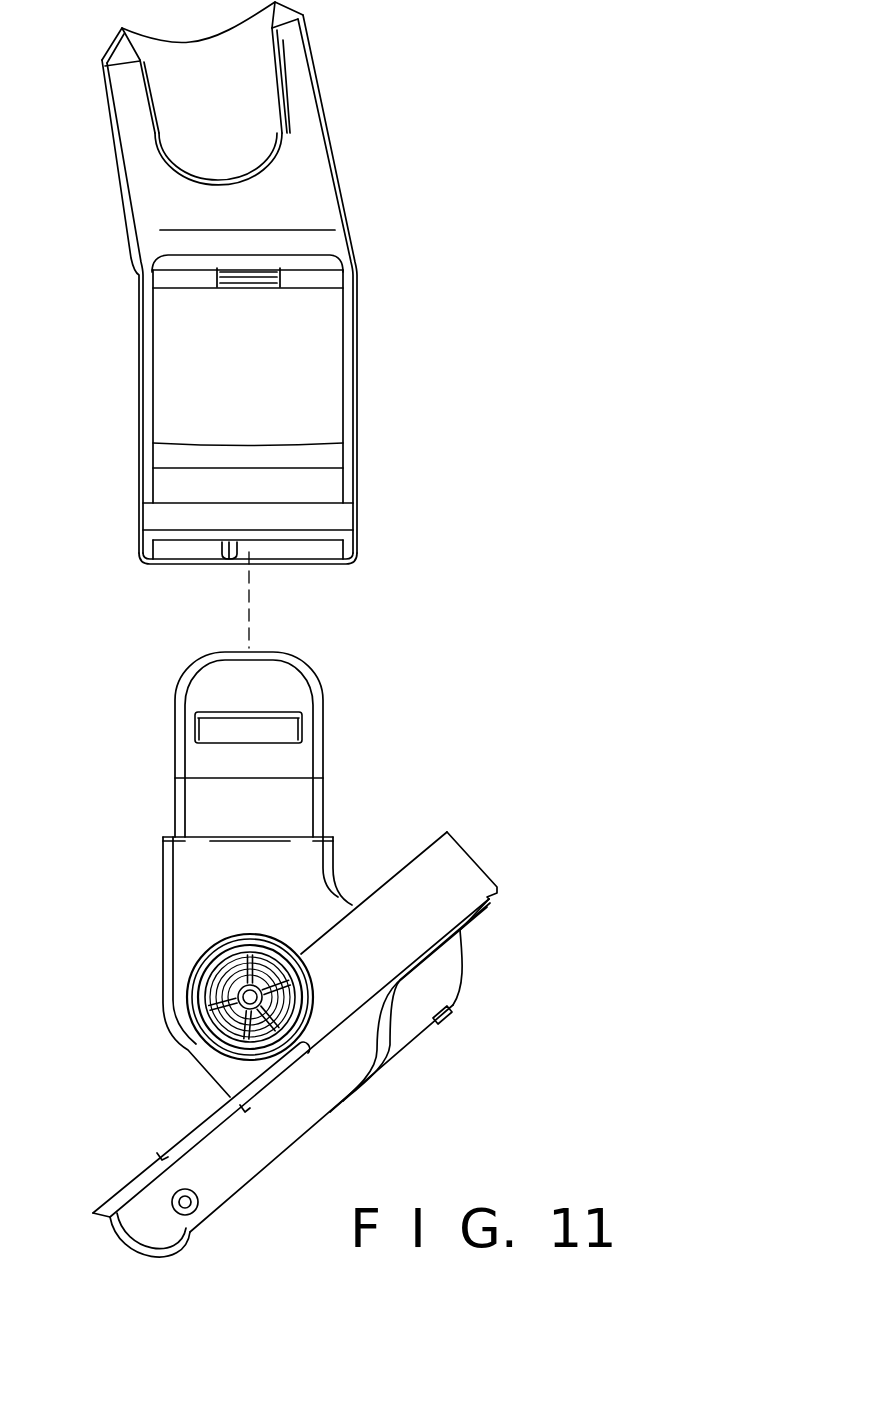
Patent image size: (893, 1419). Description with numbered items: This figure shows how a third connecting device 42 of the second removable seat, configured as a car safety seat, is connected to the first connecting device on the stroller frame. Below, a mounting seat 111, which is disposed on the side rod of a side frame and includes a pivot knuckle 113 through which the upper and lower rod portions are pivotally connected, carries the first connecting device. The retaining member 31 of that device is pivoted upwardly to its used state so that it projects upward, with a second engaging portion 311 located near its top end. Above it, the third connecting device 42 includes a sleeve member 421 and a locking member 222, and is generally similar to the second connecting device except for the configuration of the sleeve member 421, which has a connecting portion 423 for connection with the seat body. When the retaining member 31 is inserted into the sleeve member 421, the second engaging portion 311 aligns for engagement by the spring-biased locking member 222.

The third connecting device 42 is at (306, 325).
The sleeve member 421 is at (287, 217).
The connecting portion 423 is at (293, 63).
The locking member 222 is at (277, 397).
The retaining member 31 is at (303, 869).
The second engaging portion 311 is at (263, 730).
The mounting seat 111 is at (457, 888).
The pivot knuckle 113 is at (248, 998).